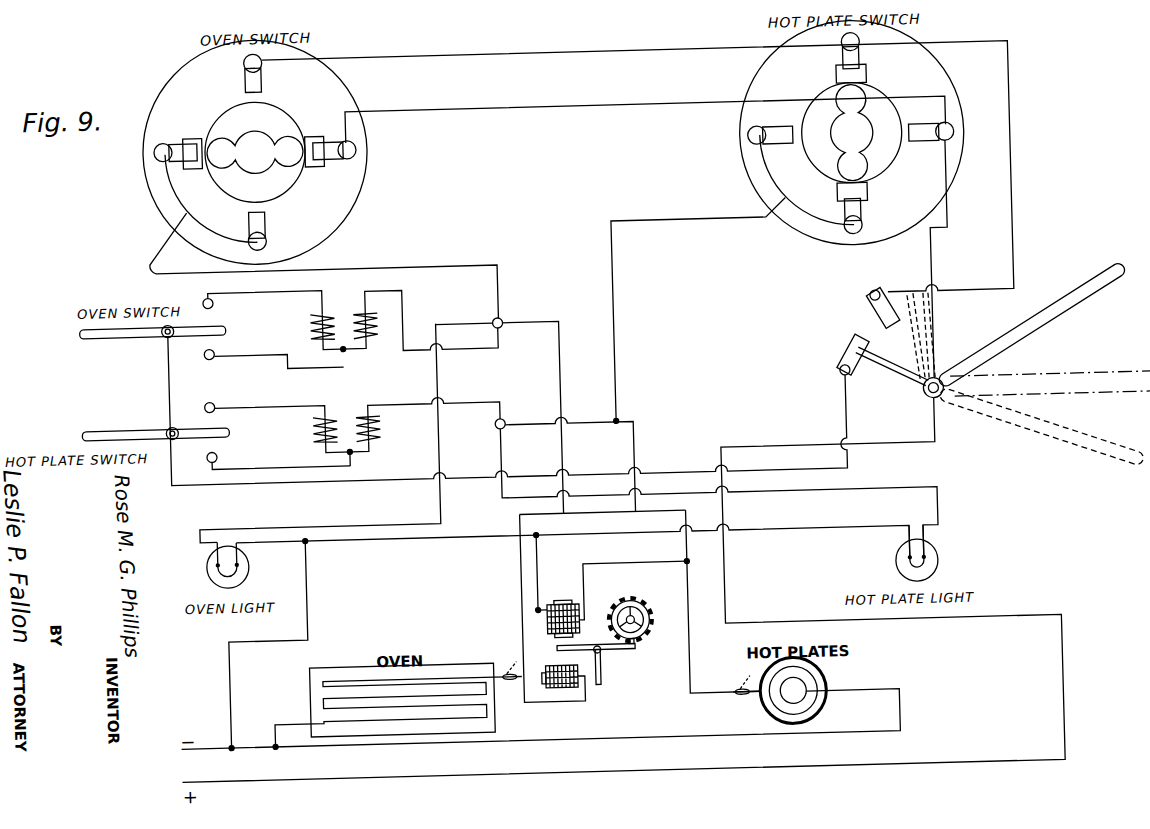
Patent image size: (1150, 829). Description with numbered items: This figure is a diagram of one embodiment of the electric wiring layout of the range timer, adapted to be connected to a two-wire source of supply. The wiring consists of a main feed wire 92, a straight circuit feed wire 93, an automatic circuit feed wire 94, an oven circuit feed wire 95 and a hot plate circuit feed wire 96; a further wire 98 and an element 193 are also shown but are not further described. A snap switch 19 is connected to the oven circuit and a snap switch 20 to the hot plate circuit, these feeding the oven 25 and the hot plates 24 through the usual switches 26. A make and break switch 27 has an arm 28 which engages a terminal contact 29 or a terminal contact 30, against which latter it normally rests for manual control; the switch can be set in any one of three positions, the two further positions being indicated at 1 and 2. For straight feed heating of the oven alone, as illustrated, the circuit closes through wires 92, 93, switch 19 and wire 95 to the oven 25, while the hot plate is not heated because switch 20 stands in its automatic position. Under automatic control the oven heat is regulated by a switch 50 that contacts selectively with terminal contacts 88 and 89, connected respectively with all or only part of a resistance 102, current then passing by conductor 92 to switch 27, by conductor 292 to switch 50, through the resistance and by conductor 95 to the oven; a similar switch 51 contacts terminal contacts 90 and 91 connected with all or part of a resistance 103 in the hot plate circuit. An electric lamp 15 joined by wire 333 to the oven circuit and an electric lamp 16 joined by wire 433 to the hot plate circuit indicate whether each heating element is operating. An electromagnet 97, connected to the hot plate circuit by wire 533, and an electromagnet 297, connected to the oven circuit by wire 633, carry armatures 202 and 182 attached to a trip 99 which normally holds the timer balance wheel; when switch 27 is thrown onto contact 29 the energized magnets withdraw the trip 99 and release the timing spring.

The snap switch 19 is at (302, 118).
The snap switch 20 is at (832, 98).
The automatic circuit feed wire 94 is at (597, 52).
The straight circuit feed wire 93 is at (583, 106).
The oven circuit feed wire 95 is at (481, 263).
The hot plate circuit feed wire 96 is at (617, 345).
The conductor 292 is at (626, 474).
The wire 433 is at (503, 461).
The wire 333 is at (302, 518).
The conductor 98 is at (463, 534).
The wire 533 is at (650, 562).
The wire 633 is at (545, 703).
The main feed wire 92 is at (935, 442).
The switch 50 is at (136, 328).
The switch 51 is at (134, 415).
The terminal contact 88 is at (217, 294).
The terminal contact 89 is at (274, 364).
The terminal contact 90 is at (215, 396).
The terminal contact 91 is at (216, 446).
The resistance 102 is at (365, 306).
The resistance 103 is at (365, 409).
The electric lamp 15 is at (247, 560).
The electric lamp 16 is at (936, 570).
The oven 25 is at (486, 650).
The switch 26 is at (502, 680).
The hot plate 24 is at (820, 678).
The electromagnet 97 is at (580, 612).
The gear 193 is at (626, 600).
The armature 202 is at (610, 646).
The trip 99 is at (619, 659).
The armature 182 is at (596, 684).
The electromagnet 297 is at (565, 690).
The arm 28 is at (899, 391).
The terminal contact 30 is at (840, 374).
The terminal contact 29 is at (870, 318).
The make and break switch 27 is at (1066, 340).
The switch position 1 is at (925, 335).
The switch position 2 is at (910, 336).